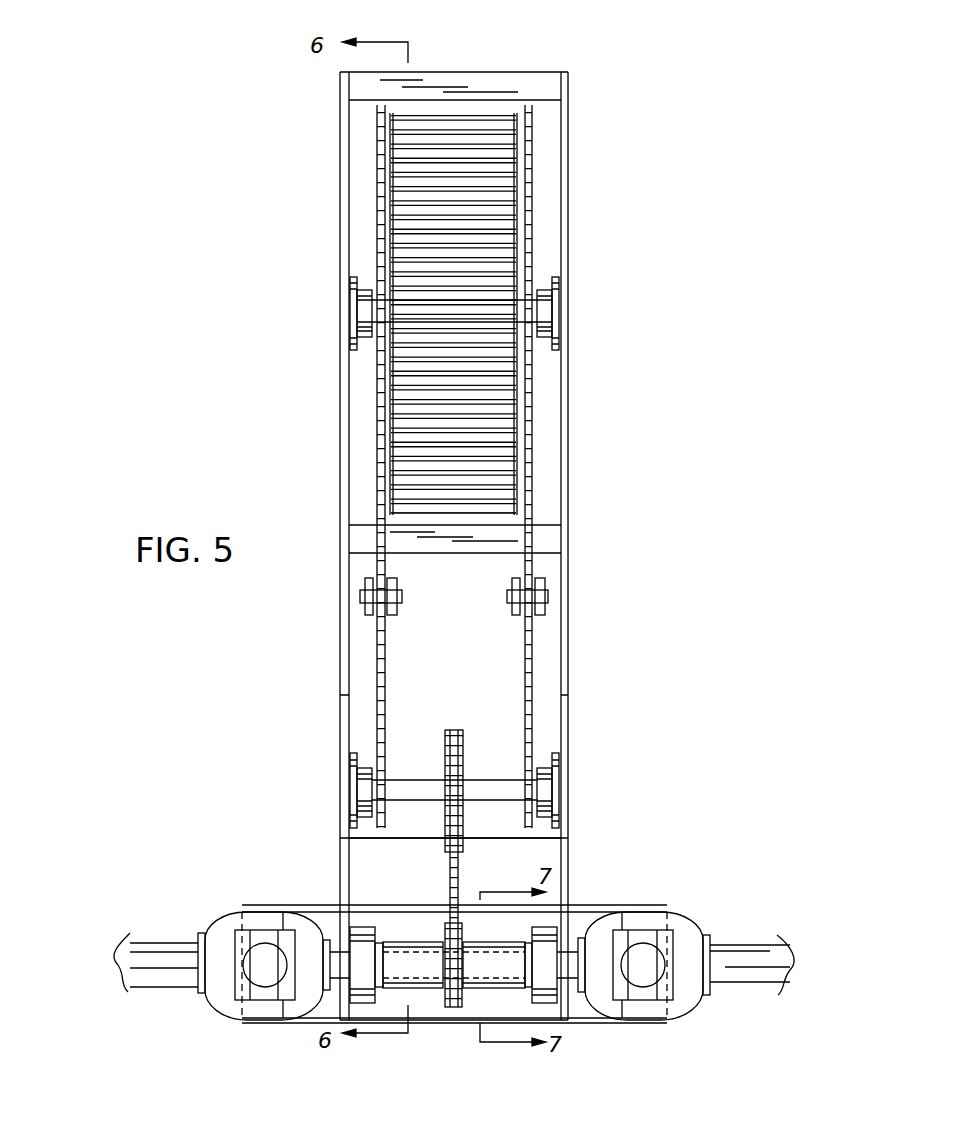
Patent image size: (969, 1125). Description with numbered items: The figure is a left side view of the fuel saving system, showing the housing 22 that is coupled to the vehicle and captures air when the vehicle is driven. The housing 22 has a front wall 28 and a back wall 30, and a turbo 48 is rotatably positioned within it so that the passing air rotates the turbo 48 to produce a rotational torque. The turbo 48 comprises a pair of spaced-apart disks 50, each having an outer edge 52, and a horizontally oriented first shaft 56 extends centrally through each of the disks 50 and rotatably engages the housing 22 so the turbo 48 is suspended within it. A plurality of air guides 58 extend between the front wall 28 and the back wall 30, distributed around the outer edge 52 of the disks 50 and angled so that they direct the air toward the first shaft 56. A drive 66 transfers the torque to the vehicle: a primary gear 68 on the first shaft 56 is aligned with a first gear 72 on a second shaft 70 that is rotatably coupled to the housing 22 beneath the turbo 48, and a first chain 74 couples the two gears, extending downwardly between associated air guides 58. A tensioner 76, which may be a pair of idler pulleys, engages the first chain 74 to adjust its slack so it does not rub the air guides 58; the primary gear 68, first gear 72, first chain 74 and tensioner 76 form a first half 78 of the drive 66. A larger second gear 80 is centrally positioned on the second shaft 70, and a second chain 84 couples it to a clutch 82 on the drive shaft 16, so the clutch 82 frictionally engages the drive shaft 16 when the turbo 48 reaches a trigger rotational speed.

The drive shaft 16 is at (757, 958).
The housing 22 is at (340, 114).
The front wall 28 is at (343, 188).
The back wall 30 is at (567, 250).
The turbo 48 is at (508, 103).
The disks 50 is at (515, 148).
The outer edge 52 is at (393, 370).
The first shaft 56 is at (387, 300).
The air guides 58 is at (490, 77).
The drive 66 is at (337, 739).
The primary gear 68 is at (380, 407).
The second shaft 70 is at (500, 778).
The first gear 72 is at (372, 796).
The first chain 74 is at (380, 665).
The tensioner 76 is at (370, 587).
The first half 78 is at (372, 632).
The second gear 80 is at (445, 750).
The clutch 82 is at (400, 944).
The second chain 84 is at (460, 865).